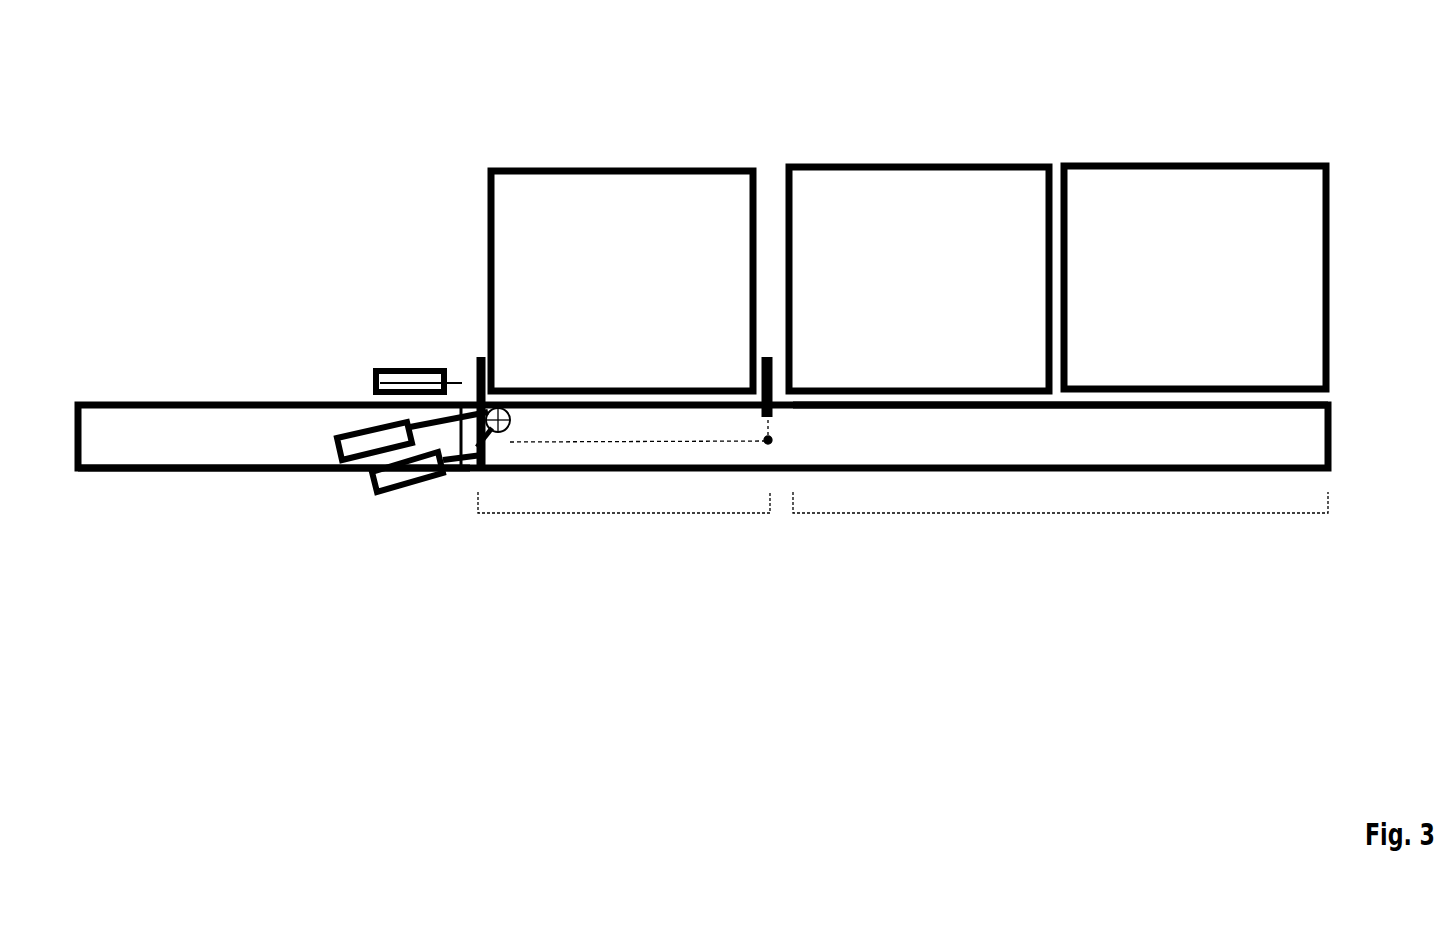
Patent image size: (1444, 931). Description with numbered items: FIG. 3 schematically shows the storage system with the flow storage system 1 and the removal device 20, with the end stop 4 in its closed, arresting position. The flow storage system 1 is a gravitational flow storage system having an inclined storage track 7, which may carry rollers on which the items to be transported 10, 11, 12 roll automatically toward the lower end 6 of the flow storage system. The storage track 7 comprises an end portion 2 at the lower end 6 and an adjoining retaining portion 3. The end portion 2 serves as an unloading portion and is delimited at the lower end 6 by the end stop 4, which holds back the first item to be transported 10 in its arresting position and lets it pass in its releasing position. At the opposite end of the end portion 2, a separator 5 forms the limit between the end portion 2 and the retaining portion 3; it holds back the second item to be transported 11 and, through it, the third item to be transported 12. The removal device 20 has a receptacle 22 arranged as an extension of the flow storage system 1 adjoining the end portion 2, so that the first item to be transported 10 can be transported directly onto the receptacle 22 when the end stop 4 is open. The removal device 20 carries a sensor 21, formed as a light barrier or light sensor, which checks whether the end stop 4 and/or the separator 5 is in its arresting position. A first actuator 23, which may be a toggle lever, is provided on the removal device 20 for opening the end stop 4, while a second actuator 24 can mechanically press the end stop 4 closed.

The flow storage system 1 is at (1285, 437).
The end portion 2 is at (628, 513).
The retaining portion 3 is at (1070, 513).
The end stop 4 is at (470, 372).
The separator 5 is at (772, 358).
The lower end of the flow storage system 6 is at (478, 468).
The storage track 7 is at (856, 430).
The first item to be transported 10 is at (580, 222).
The second item to be transported 11 is at (885, 222).
The third item to be transported 12 is at (1145, 200).
The removal device 20 is at (277, 445).
The sensor 21 is at (415, 370).
The receptacle 22 is at (255, 345).
The first actuator 23 is at (401, 478).
The second actuator 24 is at (368, 428).